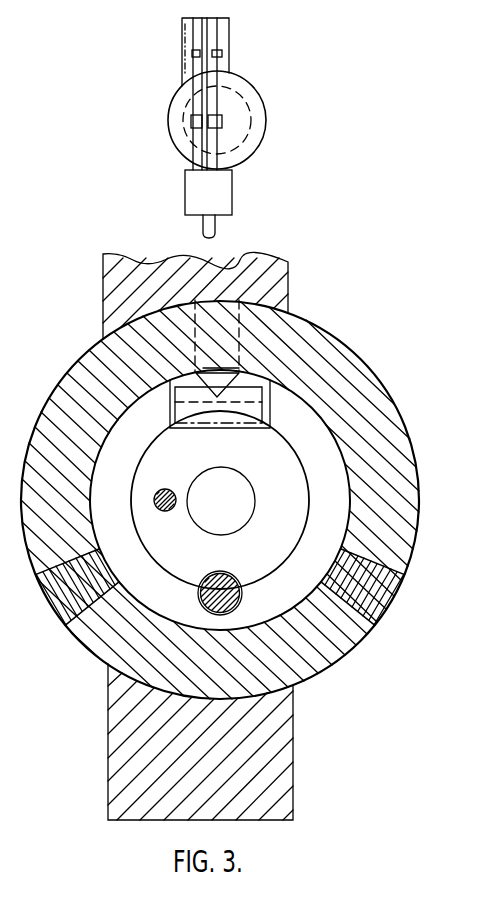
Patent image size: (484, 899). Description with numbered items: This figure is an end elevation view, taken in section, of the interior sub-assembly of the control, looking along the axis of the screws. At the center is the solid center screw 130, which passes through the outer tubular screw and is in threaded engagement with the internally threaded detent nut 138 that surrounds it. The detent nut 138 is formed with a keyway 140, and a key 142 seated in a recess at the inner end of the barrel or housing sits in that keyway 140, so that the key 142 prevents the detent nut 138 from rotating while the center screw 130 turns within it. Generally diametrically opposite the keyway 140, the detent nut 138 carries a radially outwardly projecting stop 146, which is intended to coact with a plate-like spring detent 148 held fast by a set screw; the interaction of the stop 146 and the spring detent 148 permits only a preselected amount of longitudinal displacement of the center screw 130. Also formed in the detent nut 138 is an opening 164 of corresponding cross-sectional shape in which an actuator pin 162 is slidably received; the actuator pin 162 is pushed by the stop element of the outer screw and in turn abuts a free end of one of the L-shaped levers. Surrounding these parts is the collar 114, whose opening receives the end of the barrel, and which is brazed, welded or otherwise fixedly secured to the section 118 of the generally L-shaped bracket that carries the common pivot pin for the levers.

The collar 114 is at (345, 362).
The section of bracket 118 is at (279, 276).
The center screw 130 is at (233, 472).
The detent nut 138 is at (293, 478).
The keyway 140 is at (227, 573).
The key 142 is at (227, 592).
The stop 146 is at (252, 410).
The spring detent 148 is at (213, 383).
The actuator pin 162 is at (154, 492).
The opening 164 is at (167, 489).